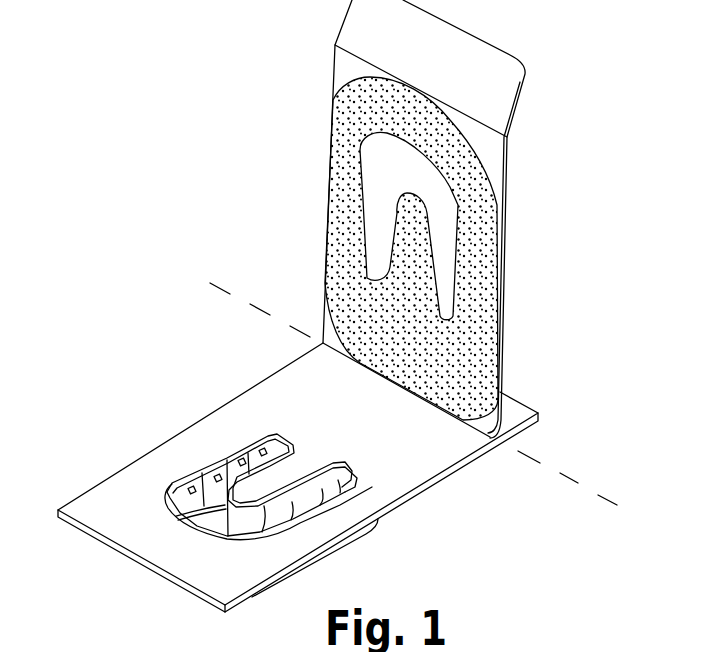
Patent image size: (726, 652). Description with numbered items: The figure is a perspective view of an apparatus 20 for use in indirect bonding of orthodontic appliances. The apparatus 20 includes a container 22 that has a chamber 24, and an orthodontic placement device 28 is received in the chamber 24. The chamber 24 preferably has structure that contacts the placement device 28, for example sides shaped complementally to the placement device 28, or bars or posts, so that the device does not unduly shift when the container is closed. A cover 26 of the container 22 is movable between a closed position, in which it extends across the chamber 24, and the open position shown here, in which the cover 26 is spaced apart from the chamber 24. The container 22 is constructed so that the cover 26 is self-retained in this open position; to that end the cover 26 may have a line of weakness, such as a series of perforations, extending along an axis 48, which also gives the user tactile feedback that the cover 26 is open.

The apparatus 20 is at (226, 239).
The container 22 is at (433, 490).
The chamber 24 is at (173, 484).
The cover 26 is at (343, 70).
The orthodontic placement device 28 is at (222, 478).
The axis 48 is at (566, 481).